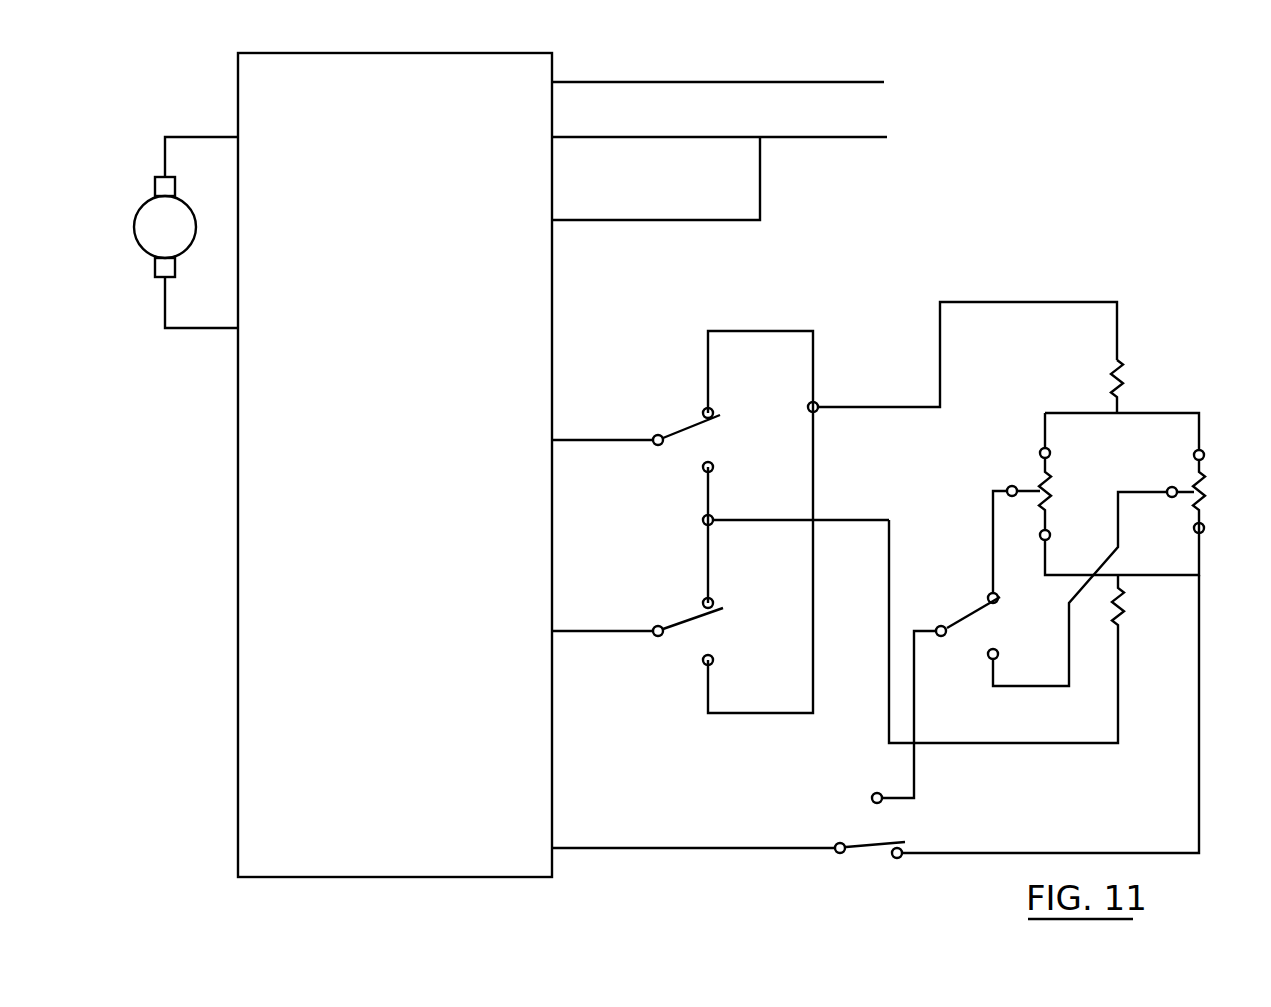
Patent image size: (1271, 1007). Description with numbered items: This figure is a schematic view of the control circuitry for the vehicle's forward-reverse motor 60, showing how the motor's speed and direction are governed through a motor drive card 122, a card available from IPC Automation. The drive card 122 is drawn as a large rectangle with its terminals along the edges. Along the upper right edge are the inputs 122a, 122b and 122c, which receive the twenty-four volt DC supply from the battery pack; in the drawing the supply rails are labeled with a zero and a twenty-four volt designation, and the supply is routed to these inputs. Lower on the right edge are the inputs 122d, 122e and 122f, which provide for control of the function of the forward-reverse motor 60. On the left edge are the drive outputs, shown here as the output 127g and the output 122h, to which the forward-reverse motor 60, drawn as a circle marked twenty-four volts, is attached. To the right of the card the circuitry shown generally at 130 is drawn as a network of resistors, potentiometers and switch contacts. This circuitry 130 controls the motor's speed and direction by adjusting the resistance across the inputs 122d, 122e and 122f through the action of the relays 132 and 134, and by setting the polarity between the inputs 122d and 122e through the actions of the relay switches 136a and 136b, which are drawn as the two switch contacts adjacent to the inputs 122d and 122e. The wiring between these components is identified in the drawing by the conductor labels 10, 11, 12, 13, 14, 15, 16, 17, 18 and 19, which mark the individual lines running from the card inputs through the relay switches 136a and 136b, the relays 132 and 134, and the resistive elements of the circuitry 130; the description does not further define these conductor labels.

The motor drive card 122 is at (437, 72).
The drive card input 122a is at (554, 80).
The drive card input 122b is at (554, 135).
The drive card input 122c is at (554, 218).
The drive card input 122d is at (554, 438).
The drive card input 122e is at (554, 629).
The drive card input 122f is at (554, 846).
The M+ connection 127g is at (238, 137).
The drive output 122h is at (238, 328).
The forward-reverse motor 60 is at (148, 208).
The control circuitry 130 is at (1230, 297).
The relay 132 is at (728, 826).
The relay 134 is at (975, 638).
The relay switch 136a is at (672, 430).
The relay switch 136b is at (676, 621).
The wire 10 is at (602, 429).
The wire 11 is at (967, 354).
The wire 12 is at (782, 522).
The wire 13 is at (602, 620).
The wire 14 is at (693, 836).
The wire 15 is at (890, 720).
The wire 16 is at (1050, 714).
The wire 17 is at (1047, 698).
The wire 18 is at (1001, 537).
The wire 19 is at (1216, 410).